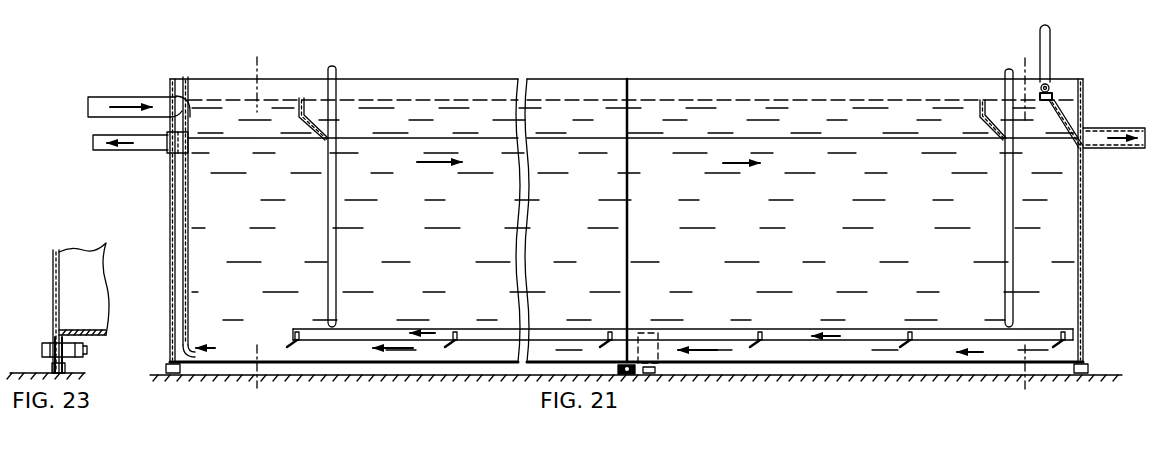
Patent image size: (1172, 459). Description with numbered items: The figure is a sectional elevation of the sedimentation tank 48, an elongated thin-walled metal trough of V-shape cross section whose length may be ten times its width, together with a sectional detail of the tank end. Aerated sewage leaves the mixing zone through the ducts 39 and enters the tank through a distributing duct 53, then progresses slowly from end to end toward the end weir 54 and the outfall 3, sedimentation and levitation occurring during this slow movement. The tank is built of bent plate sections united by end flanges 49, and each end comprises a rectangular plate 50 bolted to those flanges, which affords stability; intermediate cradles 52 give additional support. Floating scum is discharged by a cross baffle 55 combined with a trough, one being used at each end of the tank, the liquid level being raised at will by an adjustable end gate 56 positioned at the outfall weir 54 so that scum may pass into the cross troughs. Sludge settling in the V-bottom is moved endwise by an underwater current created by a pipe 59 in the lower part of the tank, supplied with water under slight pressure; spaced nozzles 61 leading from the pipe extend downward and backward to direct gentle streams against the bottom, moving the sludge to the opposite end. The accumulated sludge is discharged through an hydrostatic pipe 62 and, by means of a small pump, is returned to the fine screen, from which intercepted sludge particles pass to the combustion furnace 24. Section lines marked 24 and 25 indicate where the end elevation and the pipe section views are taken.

In FIG. 21, the outfall 3 is at (1130, 144).
In FIG. 21, the combustion furnace 24 is at (257, 57).
In FIG. 21, the section line 25 is at (1039, 58).
In FIG. 21, the ducts 39 is at (127, 97).
In FIG. 21, the sedimentation tank 48 is at (597, 90).
In FIG. 21, the end flanges 49 is at (629, 370).
In FIG. 23, the end flanges 49 is at (62, 365).
In FIG. 21, the end plate 50 is at (170, 307).
In FIG. 23, the end plate 50 is at (53, 302).
In FIG. 21, the intermediate cradles 52 is at (660, 370).
In FIG. 21, the distributing duct 53 is at (185, 77).
In FIG. 21, the end weir 54 is at (1073, 112).
In FIG. 21, the cross baffle 55 is at (310, 100).
In FIG. 21, the adjustable end gate 56 is at (1051, 97).
In FIG. 21, the pipe 59 is at (818, 340).
In FIG. 21, the nozzles 61 is at (903, 346).
In FIG. 21, the hydrostatic pipe 62 is at (143, 143).